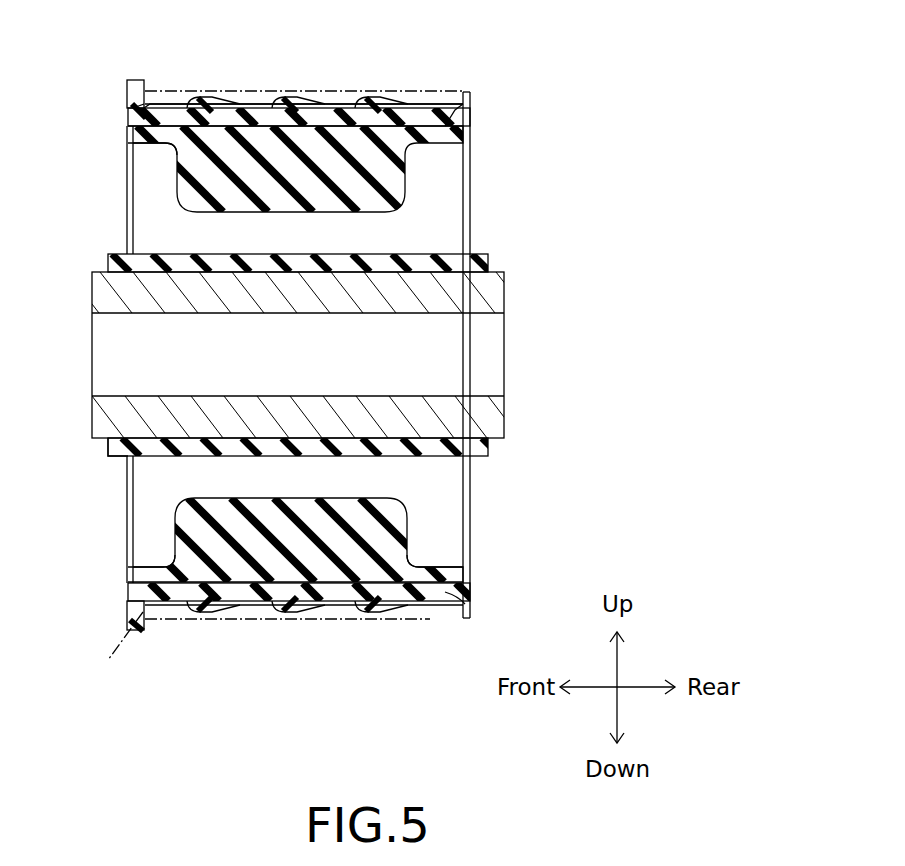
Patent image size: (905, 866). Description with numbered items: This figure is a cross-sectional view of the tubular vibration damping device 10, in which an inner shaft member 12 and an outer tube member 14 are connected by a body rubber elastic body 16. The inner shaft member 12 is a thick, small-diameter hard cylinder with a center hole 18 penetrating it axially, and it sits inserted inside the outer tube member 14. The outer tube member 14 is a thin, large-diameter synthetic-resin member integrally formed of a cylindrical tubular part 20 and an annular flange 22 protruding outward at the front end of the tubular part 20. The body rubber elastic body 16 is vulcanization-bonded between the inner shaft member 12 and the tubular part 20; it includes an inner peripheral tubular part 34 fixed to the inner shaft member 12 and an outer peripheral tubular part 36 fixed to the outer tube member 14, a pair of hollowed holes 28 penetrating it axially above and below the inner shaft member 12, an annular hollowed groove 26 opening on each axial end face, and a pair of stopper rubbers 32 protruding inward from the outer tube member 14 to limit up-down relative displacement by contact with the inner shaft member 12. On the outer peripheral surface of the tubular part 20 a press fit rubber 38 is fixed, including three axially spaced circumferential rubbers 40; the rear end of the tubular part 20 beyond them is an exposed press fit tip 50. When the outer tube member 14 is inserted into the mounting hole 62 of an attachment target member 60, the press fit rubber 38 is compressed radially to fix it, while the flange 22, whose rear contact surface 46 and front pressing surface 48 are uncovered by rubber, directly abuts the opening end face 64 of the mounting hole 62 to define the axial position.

The tubular vibration damping device 10 is at (519, 78).
The inner shaft member 12 is at (506, 297).
The outer tube member 14 is at (340, 102).
The body rubber elastic body 16 is at (465, 163).
The center hole 18 is at (466, 396).
The tubular part 20 is at (297, 117).
The flange 22 is at (135, 100).
The hollowed groove 26 is at (440, 573).
The hollowed hole 28 is at (245, 257).
The stopper rubber 32 is at (375, 173).
The inner peripheral tubular part 34 is at (150, 447).
The outer peripheral tubular part 36 is at (142, 133).
The press fit rubber 38 is at (186, 612).
The circumferential rubber 40 is at (210, 614).
The contact surface 46 is at (150, 102).
The pressing surface 48 is at (127, 84).
The press fit tip 50 is at (450, 117).
The attachment target member 60 is at (430, 619).
The mounting hole 62 is at (470, 600).
The opening end face 64 is at (112, 651).